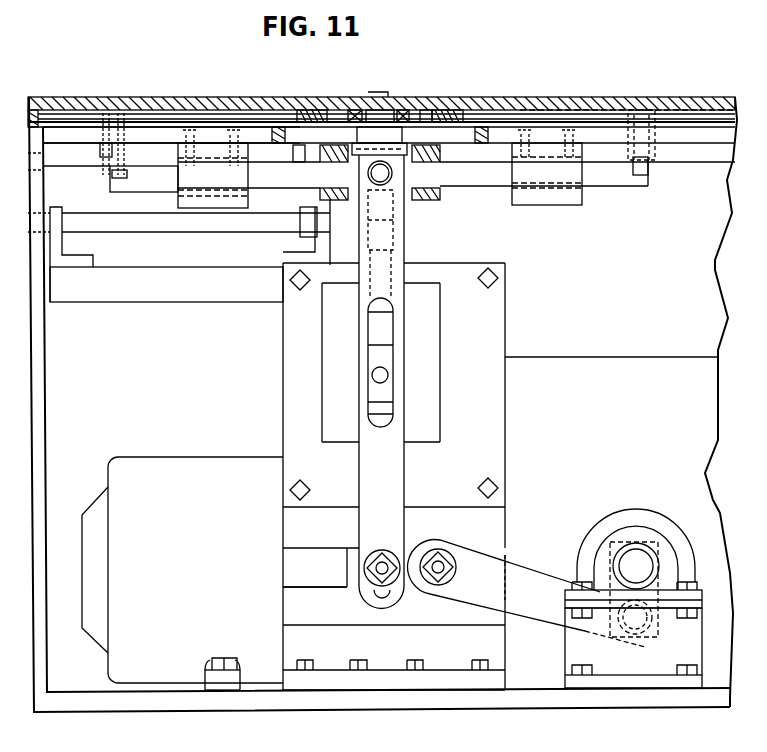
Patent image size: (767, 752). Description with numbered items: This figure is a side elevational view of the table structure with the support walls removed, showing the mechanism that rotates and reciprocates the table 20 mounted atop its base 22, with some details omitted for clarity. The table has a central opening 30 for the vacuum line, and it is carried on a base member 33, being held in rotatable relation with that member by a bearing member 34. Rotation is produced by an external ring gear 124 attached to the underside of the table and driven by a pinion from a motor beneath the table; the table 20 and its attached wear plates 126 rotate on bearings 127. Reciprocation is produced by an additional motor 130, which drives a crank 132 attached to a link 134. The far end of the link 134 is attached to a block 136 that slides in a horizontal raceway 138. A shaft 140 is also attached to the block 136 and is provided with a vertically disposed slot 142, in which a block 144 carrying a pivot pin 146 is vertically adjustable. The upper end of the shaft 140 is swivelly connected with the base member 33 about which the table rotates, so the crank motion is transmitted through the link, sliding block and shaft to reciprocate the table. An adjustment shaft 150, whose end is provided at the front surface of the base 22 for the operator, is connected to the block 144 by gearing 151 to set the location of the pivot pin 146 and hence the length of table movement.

The table 20 is at (65, 100).
The base 22 is at (75, 133).
The central opening 30 is at (378, 100).
The base member 33 is at (388, 115).
The bearing member 34 is at (338, 110).
The external ring gear 124 is at (470, 110).
The wear plates 126 is at (690, 103).
The bearings 127 is at (658, 112).
The motor 130 is at (188, 458).
The crank 132 is at (660, 620).
The link 134 is at (535, 558).
The block 136 is at (347, 552).
The horizontal raceway 138 is at (298, 585).
The shaft 140 is at (362, 463).
The slot 142 is at (382, 326).
The block 144 is at (385, 358).
The pivot pin 146 is at (386, 376).
The adjustment shaft 150 is at (142, 227).
The gearing 151 is at (402, 213).